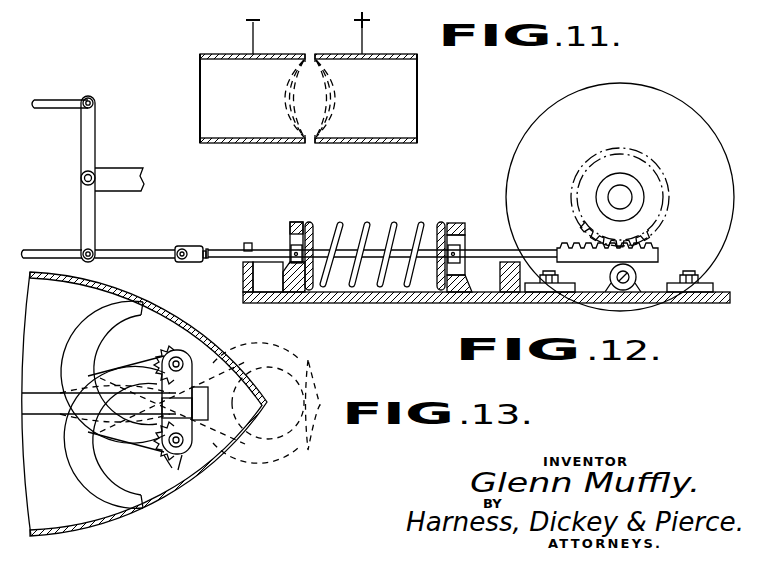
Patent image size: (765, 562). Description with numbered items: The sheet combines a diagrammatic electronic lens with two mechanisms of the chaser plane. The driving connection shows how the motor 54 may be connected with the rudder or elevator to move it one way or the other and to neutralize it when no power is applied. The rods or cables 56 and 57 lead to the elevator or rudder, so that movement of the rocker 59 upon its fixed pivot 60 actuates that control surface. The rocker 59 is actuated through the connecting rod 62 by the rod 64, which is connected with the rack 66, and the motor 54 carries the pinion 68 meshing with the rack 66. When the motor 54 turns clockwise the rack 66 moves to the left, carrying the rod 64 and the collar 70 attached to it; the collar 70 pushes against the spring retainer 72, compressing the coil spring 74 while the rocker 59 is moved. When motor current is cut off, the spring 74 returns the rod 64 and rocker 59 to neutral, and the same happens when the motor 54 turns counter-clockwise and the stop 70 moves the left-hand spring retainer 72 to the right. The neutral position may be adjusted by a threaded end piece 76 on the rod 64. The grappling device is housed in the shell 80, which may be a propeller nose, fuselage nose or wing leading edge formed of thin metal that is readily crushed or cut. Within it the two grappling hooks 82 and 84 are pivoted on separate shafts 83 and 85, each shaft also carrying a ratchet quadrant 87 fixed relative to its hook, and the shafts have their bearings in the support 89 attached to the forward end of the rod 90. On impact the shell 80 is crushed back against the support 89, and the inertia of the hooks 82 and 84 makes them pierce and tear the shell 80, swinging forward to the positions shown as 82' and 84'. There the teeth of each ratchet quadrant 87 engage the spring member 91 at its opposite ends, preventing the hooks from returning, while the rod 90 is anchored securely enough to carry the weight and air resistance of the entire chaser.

In FIG. 12, the motor 54 is at (634, 124).
In FIG. 12, the rod or cable 56 is at (48, 251).
In FIG. 12, the rod or cable 57 is at (38, 100).
In FIG. 12, the rocker 59 is at (96, 130).
In FIG. 12, the fixed pivot 60 is at (81, 179).
In FIG. 12, the connecting rod 62 is at (120, 250).
In FIG. 12, the rod 64 is at (528, 250).
In FIG. 12, the rack 66 is at (620, 264).
In FIG. 12, the pinion 68 is at (634, 174).
In FIG. 12, the collar or stop 70 is at (292, 250).
In FIG. 12, the spring retainer 72 is at (312, 230).
In FIG. 12, the coil spring 74 is at (373, 232).
In FIG. 12, the threaded end piece 76 is at (196, 247).
In FIG. 13, the shell 80 is at (240, 338).
In FIG. 13, the grappling hook 82 is at (113, 372).
In FIG. 13, the forward position of grappling hook 82' is at (215, 386).
In FIG. 13, the shaft 83 is at (182, 457).
In FIG. 13, the grappling hook 84 is at (113, 437).
In FIG. 13, the forward position of grappling hook 84' is at (215, 432).
In FIG. 13, the shaft 85 is at (184, 354).
In FIG. 13, the ratchet quadrant 87 is at (158, 358).
In FIG. 13, the support 89 is at (204, 392).
In FIG. 13, the rod 90 is at (50, 411).
In FIG. 13, the spring member 91 is at (209, 414).